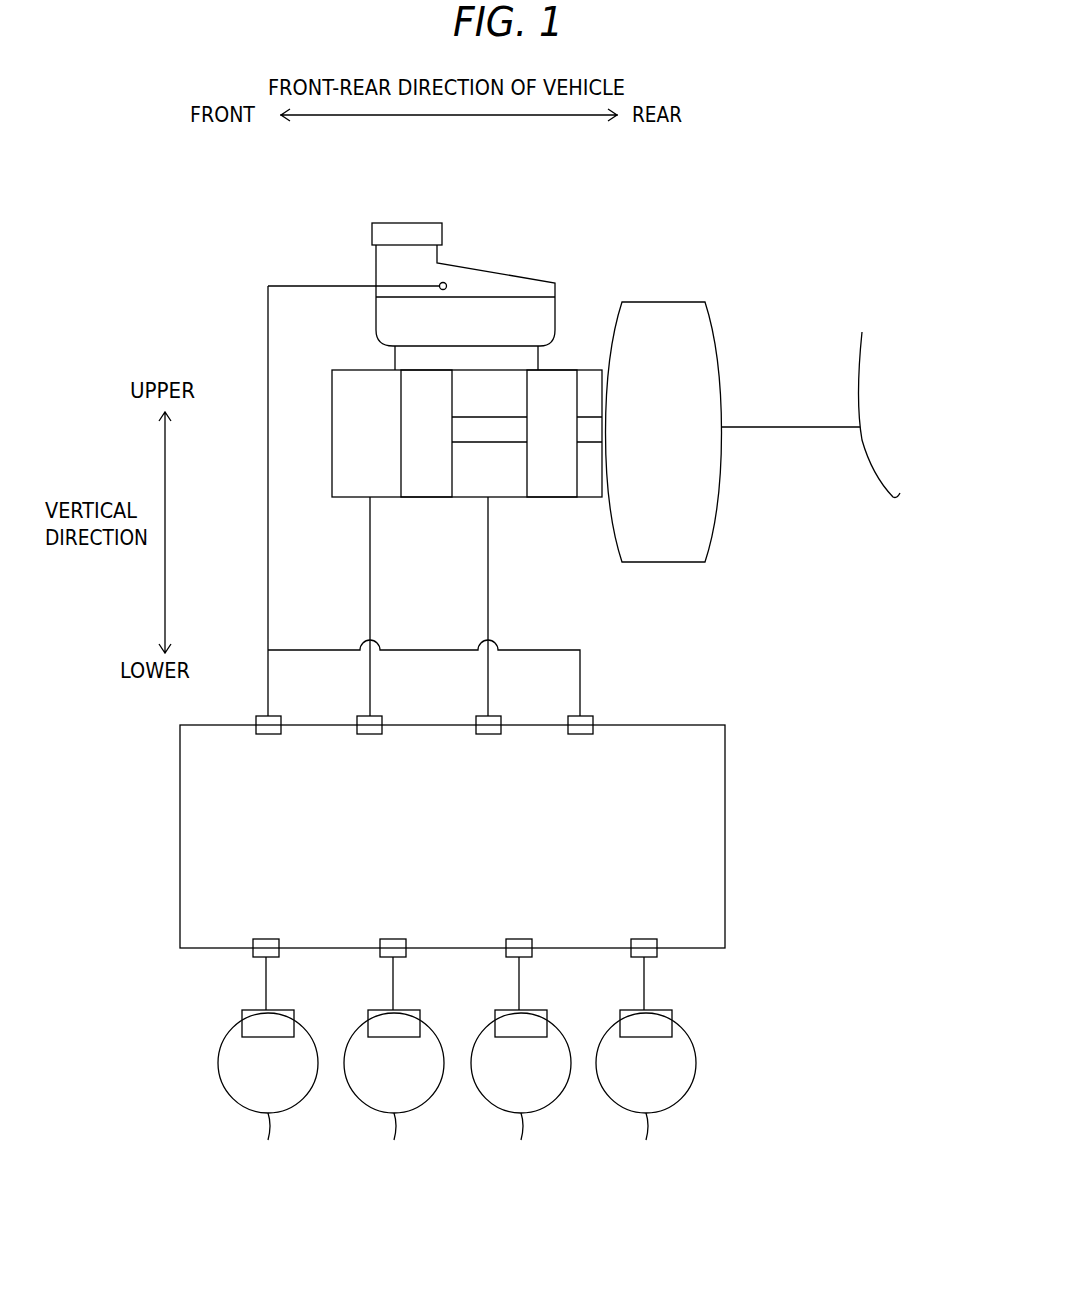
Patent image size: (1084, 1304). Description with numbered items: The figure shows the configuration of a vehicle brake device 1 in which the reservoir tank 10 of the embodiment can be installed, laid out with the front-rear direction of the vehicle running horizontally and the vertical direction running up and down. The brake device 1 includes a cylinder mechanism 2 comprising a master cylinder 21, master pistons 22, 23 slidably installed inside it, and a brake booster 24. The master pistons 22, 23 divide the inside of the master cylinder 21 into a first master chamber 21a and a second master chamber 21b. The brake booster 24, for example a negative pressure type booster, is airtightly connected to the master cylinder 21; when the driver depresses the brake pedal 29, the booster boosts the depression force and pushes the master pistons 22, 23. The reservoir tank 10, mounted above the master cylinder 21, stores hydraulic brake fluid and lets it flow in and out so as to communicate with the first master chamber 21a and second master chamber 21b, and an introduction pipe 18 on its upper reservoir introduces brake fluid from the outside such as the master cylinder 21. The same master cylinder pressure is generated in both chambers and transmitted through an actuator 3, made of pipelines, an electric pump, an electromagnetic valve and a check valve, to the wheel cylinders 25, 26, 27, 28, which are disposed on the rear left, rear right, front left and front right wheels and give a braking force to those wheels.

The brake device 1 is at (837, 227).
The cylinder mechanism 2 is at (330, 328).
The actuator 3 is at (682, 725).
The reservoir tank 10 is at (489, 272).
The introduction pipe 18 is at (440, 283).
The master cylinder 21 is at (332, 441).
The first master chamber 21a is at (500, 470).
The second master chamber 21b is at (357, 472).
The master piston 22 is at (548, 497).
The master piston 23 is at (425, 497).
The brake booster 24 is at (670, 302).
The wheel cylinder 25 is at (250, 1010).
The wheel cylinder 26 is at (382, 1010).
The wheel cylinder 27 is at (505, 1010).
The wheel cylinder 28 is at (632, 1010).
The brake pedal 29 is at (898, 478).